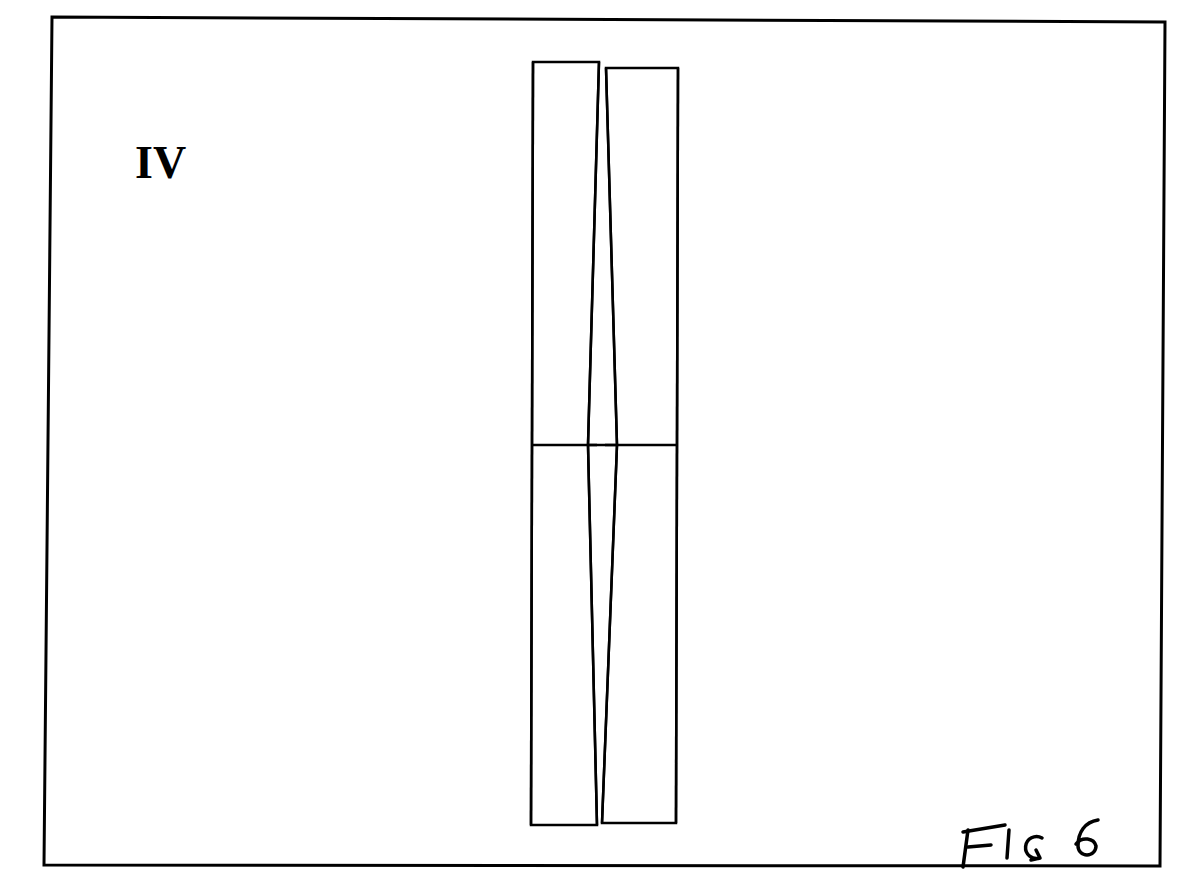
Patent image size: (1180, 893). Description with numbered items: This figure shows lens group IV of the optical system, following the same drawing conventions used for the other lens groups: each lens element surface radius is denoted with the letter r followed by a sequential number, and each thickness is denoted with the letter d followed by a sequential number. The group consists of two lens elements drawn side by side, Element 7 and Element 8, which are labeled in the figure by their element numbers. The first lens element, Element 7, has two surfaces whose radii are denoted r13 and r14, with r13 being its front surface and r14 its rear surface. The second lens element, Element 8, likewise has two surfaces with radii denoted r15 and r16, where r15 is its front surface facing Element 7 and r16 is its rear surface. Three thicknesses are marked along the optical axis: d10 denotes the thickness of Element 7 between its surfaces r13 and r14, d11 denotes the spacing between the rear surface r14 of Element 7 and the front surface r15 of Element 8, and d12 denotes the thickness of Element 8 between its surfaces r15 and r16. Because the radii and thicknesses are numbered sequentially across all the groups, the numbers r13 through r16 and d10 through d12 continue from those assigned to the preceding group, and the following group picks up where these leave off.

The Element 7 (first lens element) 7 is at (570, 671).
The Element 8 (second lens element) 8 is at (640, 694).
The radius of first surface of element 7 r13 is at (533, 173).
The radius of second surface of element 7 r14 is at (590, 222).
The radius of first surface of element 8 r15 is at (618, 255).
The radius of second surface of element 8 r16 is at (676, 317).
The thickness of element 7 d10 is at (556, 443).
The air gap between element 7 and element 8 d11 is at (604, 447).
The thickness of element 8 d12 is at (652, 443).